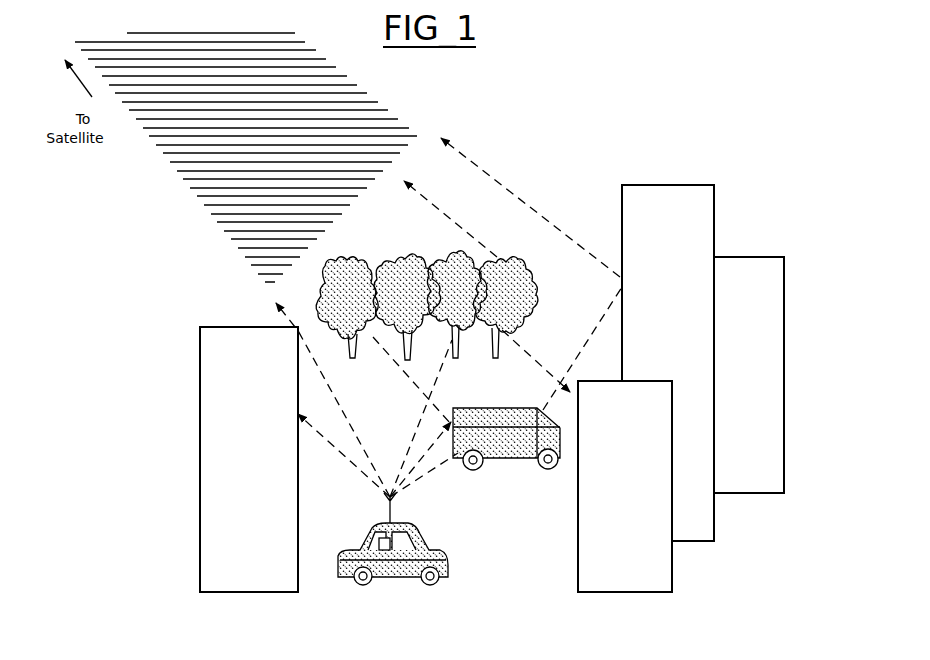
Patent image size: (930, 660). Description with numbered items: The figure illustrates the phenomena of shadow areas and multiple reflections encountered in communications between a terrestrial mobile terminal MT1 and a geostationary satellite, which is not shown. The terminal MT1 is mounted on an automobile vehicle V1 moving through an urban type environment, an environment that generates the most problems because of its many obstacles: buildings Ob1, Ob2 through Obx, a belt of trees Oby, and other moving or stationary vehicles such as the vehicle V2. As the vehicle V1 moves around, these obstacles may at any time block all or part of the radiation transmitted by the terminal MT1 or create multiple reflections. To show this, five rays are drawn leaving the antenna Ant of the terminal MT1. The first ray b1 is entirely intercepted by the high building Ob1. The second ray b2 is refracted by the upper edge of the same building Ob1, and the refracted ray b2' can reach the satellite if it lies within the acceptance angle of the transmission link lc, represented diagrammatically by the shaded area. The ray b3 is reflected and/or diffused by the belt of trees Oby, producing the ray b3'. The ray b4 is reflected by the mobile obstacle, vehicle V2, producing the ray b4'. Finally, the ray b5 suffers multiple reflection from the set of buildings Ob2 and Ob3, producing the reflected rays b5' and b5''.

The transmission link lc is at (391, 90).
The first ray b1 is at (332, 457).
The second ray b2 is at (343, 412).
The refracted ray b2' is at (289, 304).
The ray b3 is at (441, 418).
The ray b3' is at (450, 219).
The ray b4 is at (435, 464).
The ray b4' is at (411, 380).
The ray b5 is at (432, 492).
The reflected ray b5' is at (536, 351).
The reflected ray b5'' is at (531, 274).
The trees Oby is at (528, 283).
The building Ob1 is at (212, 580).
The building Ob2 is at (628, 594).
The building Ob3 is at (702, 544).
The building Obx is at (750, 497).
The automobile vehicle V1 is at (448, 568).
The vehicle V2 is at (519, 458).
The antenna Ant is at (399, 519).
The terrestrial mobile terminal MT1 is at (383, 554).